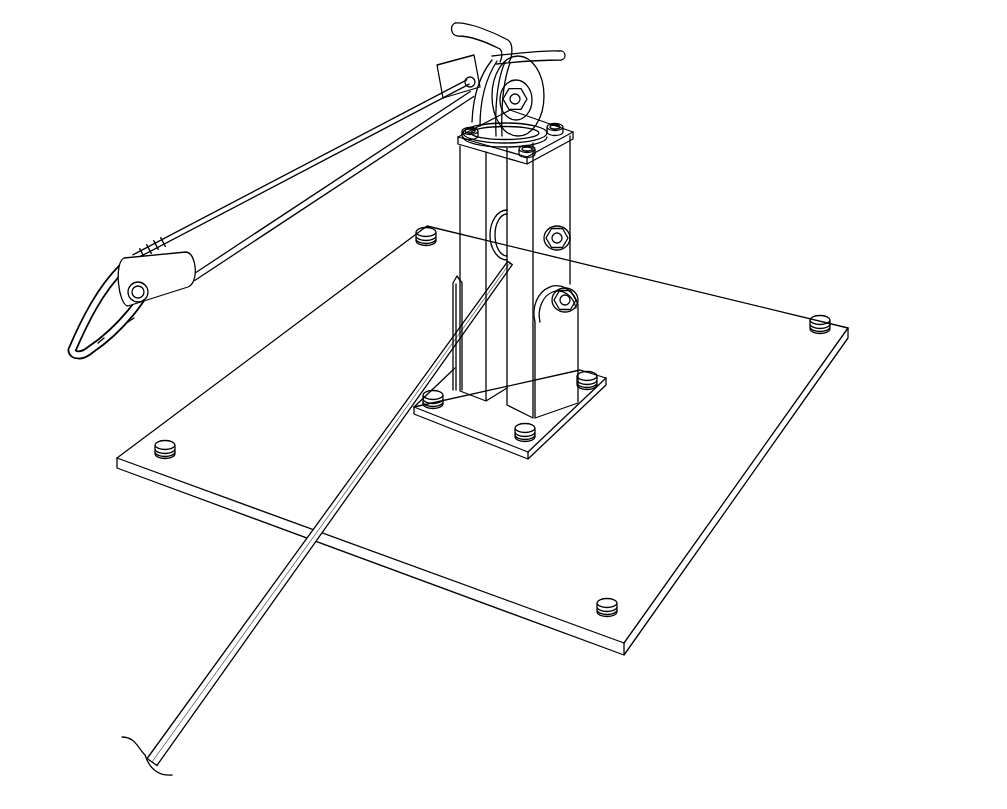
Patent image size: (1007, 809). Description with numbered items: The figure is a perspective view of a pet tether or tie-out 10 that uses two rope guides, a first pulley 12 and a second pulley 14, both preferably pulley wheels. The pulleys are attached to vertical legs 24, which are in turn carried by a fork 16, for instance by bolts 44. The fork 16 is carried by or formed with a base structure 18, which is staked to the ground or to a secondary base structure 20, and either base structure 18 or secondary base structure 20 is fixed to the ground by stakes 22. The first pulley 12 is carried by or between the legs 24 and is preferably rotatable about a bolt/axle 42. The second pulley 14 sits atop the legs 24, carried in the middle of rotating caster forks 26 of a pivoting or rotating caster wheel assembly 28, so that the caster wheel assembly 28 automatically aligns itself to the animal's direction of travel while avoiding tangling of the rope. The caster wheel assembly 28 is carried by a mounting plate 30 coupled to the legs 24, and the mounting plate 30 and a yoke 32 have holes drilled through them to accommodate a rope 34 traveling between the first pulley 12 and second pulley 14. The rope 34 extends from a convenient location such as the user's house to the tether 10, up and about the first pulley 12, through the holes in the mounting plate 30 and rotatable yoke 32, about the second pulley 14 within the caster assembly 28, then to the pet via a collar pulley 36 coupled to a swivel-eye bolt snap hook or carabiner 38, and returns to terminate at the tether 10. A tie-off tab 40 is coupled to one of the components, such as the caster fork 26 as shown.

The pet tether 10 is at (623, 49).
The first pulley 12 is at (505, 237).
The second pulley 14 is at (467, 110).
The fork 16 is at (565, 338).
The base structure 18 is at (555, 420).
The secondary base structure 20 is at (710, 447).
The stakes 22 is at (428, 228).
The legs 24 is at (560, 190).
The caster forks 26 is at (528, 91).
The rotating caster wheel assembly 28 is at (502, 157).
The mounting plate 30 is at (560, 121).
The yoke 32 is at (512, 123).
The rope 34 is at (238, 237).
The collar pulley 36 is at (150, 275).
The swivel-eye bolt snap hook or carabiner 38 is at (72, 318).
The tie-off tab 40 is at (458, 72).
The bolt/axle 42 is at (580, 300).
The bolts 44 is at (570, 240).